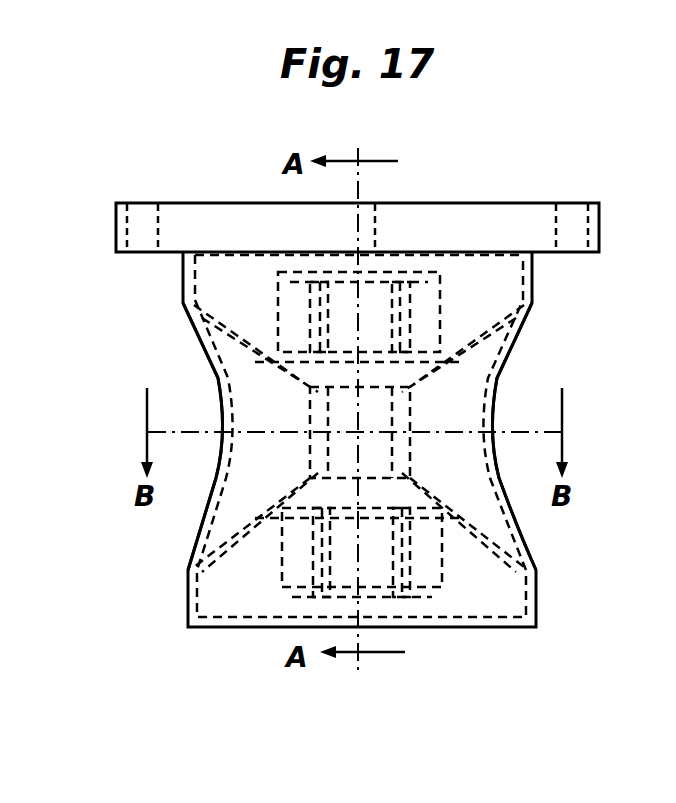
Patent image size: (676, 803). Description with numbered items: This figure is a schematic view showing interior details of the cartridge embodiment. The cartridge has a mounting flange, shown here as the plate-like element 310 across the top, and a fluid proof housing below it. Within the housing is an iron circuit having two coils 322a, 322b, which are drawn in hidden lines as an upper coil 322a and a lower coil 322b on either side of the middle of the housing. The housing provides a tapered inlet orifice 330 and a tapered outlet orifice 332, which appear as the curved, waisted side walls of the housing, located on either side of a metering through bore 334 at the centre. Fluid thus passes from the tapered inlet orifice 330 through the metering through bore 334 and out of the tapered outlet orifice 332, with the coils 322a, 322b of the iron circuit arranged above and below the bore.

The mounting plate 310 is at (452, 210).
The coil 322a is at (427, 307).
The coil 322b is at (427, 563).
The tapered inlet orifice 330 is at (245, 400).
The tapered outlet orifice 332 is at (465, 400).
The metering through bore 334 is at (375, 440).